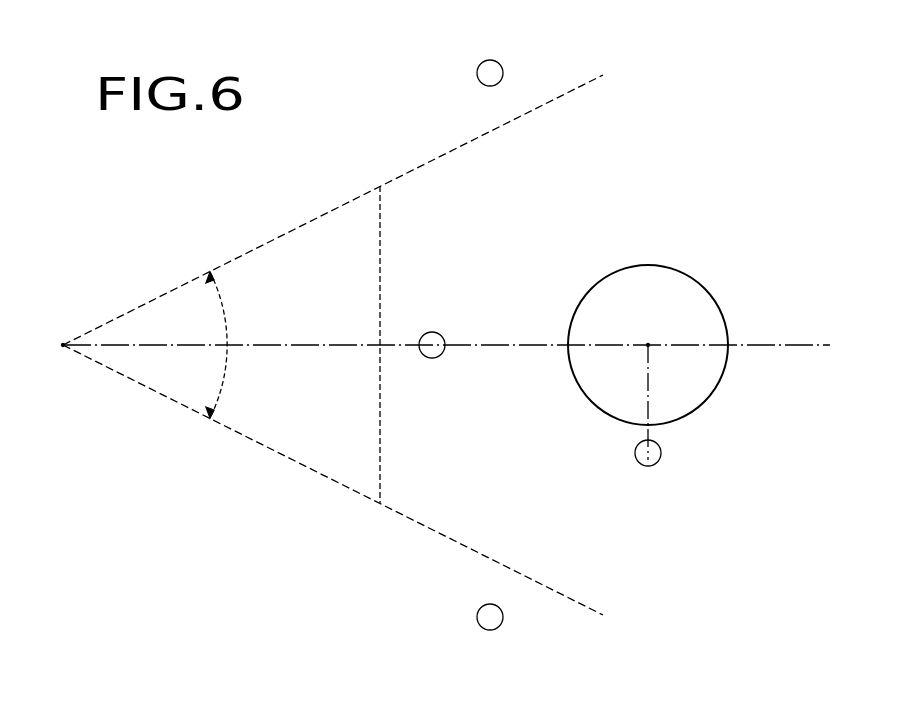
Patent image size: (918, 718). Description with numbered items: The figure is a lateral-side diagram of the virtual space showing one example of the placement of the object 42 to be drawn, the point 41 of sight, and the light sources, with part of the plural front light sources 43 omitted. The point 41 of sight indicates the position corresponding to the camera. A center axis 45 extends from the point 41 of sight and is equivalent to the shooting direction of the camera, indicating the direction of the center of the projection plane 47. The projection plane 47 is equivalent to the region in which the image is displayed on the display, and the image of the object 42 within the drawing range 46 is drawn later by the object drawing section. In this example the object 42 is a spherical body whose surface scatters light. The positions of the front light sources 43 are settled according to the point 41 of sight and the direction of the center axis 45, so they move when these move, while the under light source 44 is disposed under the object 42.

The point of sight 41 is at (62, 344).
The object 42 is at (595, 287).
The front light sources 43 is at (493, 61).
The under light source 44 is at (652, 467).
The center axis 45 is at (780, 342).
The drawing range 46 is at (228, 320).
The projection plane 47 is at (381, 235).